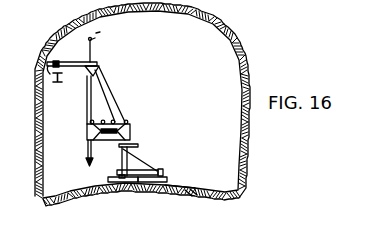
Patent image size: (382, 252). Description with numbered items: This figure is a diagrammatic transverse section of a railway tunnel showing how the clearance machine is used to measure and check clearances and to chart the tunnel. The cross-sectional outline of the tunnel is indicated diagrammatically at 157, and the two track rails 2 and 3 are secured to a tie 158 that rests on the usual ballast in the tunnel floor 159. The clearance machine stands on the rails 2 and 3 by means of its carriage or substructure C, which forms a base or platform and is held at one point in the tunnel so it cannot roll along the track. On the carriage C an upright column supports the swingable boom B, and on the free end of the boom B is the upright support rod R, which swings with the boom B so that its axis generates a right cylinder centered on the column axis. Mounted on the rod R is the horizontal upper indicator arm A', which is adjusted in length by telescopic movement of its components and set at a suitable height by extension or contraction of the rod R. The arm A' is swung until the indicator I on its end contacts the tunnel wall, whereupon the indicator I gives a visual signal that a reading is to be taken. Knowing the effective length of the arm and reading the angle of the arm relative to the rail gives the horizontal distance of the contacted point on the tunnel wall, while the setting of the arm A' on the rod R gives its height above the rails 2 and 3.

The cross-sectional outline of the tunnel 157 is at (212, 51).
The tie 158 is at (172, 180).
The tunnel floor 159 is at (187, 188).
The rail 2 is at (127, 182).
The rail 3 is at (157, 182).
The upper indicator arm A' is at (73, 54).
The indicator device I is at (54, 74).
The support member or rod R is at (88, 99).
The swingable boom B is at (108, 140).
The carriage or substructure C is at (153, 163).